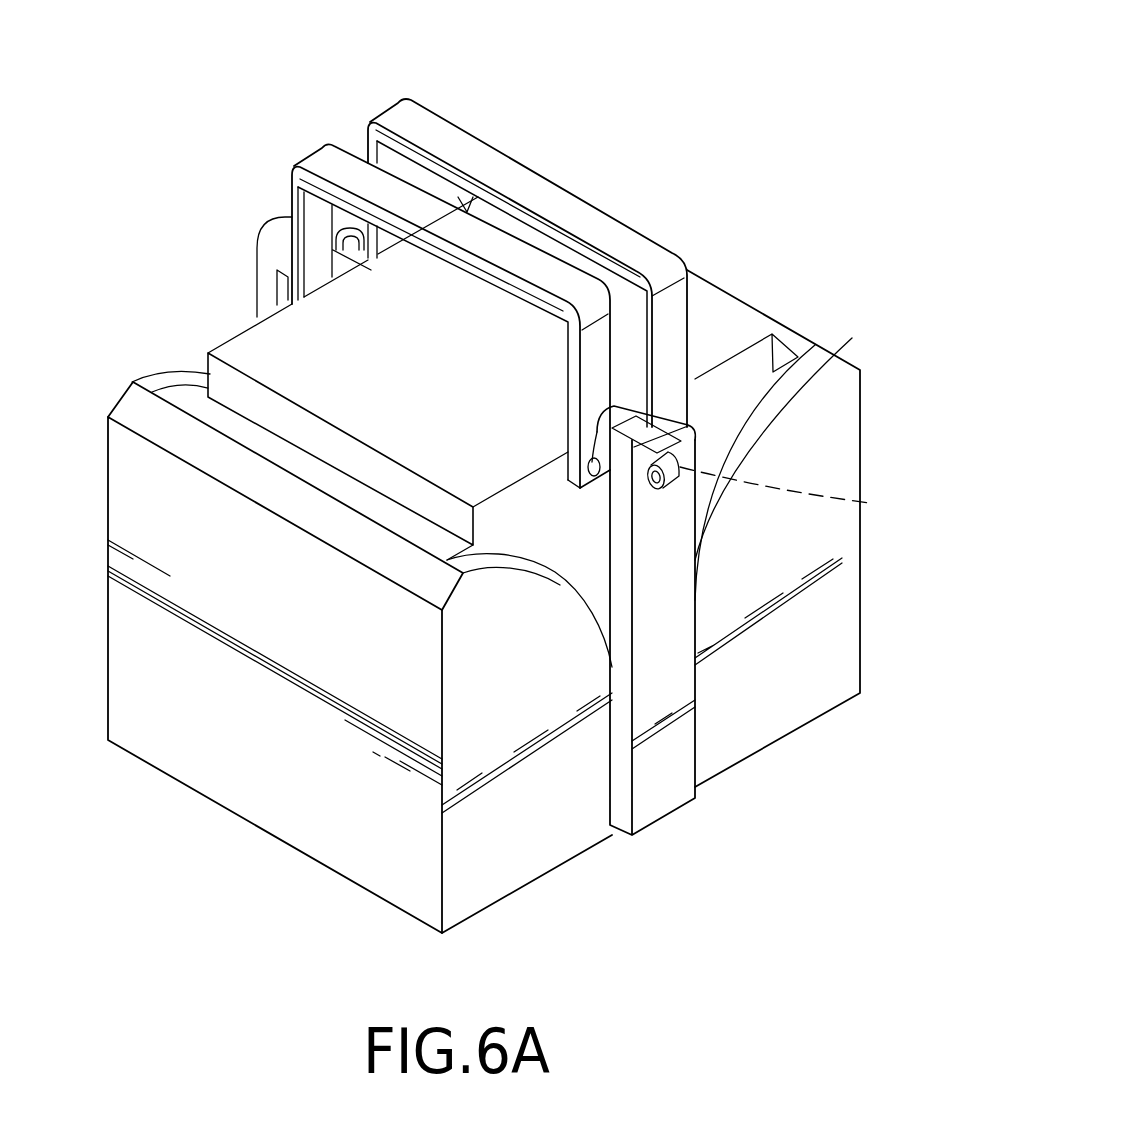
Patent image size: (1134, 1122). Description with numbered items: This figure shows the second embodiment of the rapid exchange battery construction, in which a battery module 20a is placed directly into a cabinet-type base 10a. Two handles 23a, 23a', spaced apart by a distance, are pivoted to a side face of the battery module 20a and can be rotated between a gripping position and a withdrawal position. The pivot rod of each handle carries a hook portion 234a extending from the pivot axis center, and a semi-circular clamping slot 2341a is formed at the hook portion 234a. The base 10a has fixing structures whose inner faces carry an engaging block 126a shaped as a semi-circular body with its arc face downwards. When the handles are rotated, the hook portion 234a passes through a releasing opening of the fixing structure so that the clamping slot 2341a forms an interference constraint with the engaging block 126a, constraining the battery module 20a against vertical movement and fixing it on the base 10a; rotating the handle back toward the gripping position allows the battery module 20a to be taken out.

The base 10a is at (222, 820).
The battery module 20a is at (584, 417).
The handle 23a is at (527, 263).
The handle 23a' is at (396, 297).
The hook portion 234a is at (680, 402).
The clamping slot 2341a is at (680, 490).
The engaging block 126a is at (873, 503).